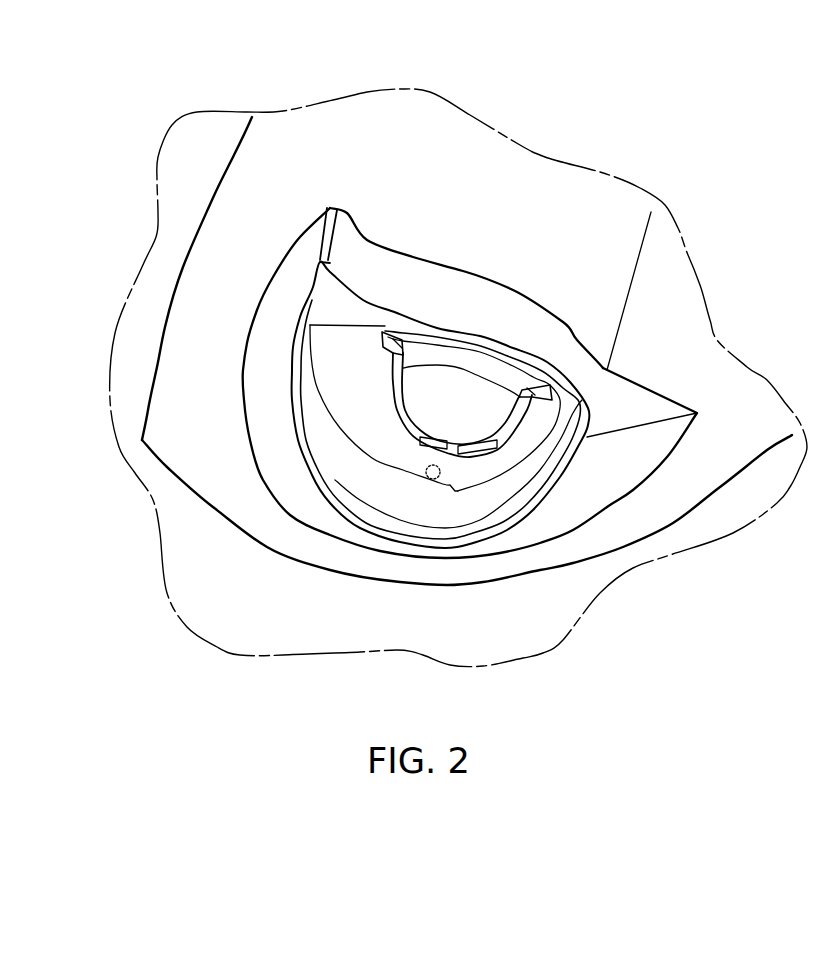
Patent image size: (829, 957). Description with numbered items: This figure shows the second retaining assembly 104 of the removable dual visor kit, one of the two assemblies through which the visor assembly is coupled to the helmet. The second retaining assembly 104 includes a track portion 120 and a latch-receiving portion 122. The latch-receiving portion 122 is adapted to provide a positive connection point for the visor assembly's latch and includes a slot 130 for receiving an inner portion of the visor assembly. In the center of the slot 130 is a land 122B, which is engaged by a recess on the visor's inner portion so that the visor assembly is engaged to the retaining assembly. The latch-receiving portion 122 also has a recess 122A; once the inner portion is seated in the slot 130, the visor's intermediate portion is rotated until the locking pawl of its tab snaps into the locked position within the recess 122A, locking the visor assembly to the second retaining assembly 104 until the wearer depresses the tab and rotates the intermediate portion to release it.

The second retaining assembly 104 is at (333, 208).
The track portion 120 is at (325, 382).
The slot 130 is at (490, 430).
The latch-receiving portion 122 is at (380, 427).
The recess 122A is at (452, 470).
The land 122B is at (442, 447).